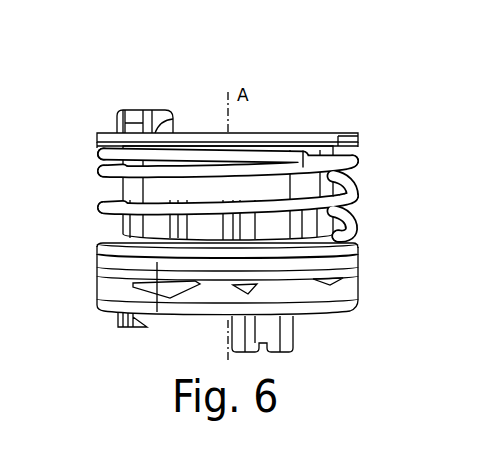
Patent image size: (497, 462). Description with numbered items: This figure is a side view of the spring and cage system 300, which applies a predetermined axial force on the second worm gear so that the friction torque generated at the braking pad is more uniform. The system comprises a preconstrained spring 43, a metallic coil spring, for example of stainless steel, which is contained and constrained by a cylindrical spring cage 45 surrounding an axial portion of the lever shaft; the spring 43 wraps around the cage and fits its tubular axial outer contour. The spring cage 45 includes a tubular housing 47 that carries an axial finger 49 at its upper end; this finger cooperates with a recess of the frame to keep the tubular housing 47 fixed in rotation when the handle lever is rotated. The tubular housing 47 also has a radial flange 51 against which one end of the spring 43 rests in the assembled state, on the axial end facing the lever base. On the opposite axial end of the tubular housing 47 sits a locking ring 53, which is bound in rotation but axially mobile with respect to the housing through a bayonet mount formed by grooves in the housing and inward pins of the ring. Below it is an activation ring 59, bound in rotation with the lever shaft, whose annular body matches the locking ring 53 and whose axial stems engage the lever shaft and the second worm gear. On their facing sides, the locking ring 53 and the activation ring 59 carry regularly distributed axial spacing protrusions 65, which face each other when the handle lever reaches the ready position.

The spring and cage system 300 is at (298, 110).
The spring 43 is at (100, 203).
The spring cage 45 is at (447, 172).
The tubular housing 47 is at (333, 174).
The axial finger 49 is at (117, 122).
The radial flange 51 is at (361, 143).
The locking ring 53 is at (348, 262).
The activation ring 59 is at (350, 297).
The axial spacing protrusions 65 is at (484, 414).